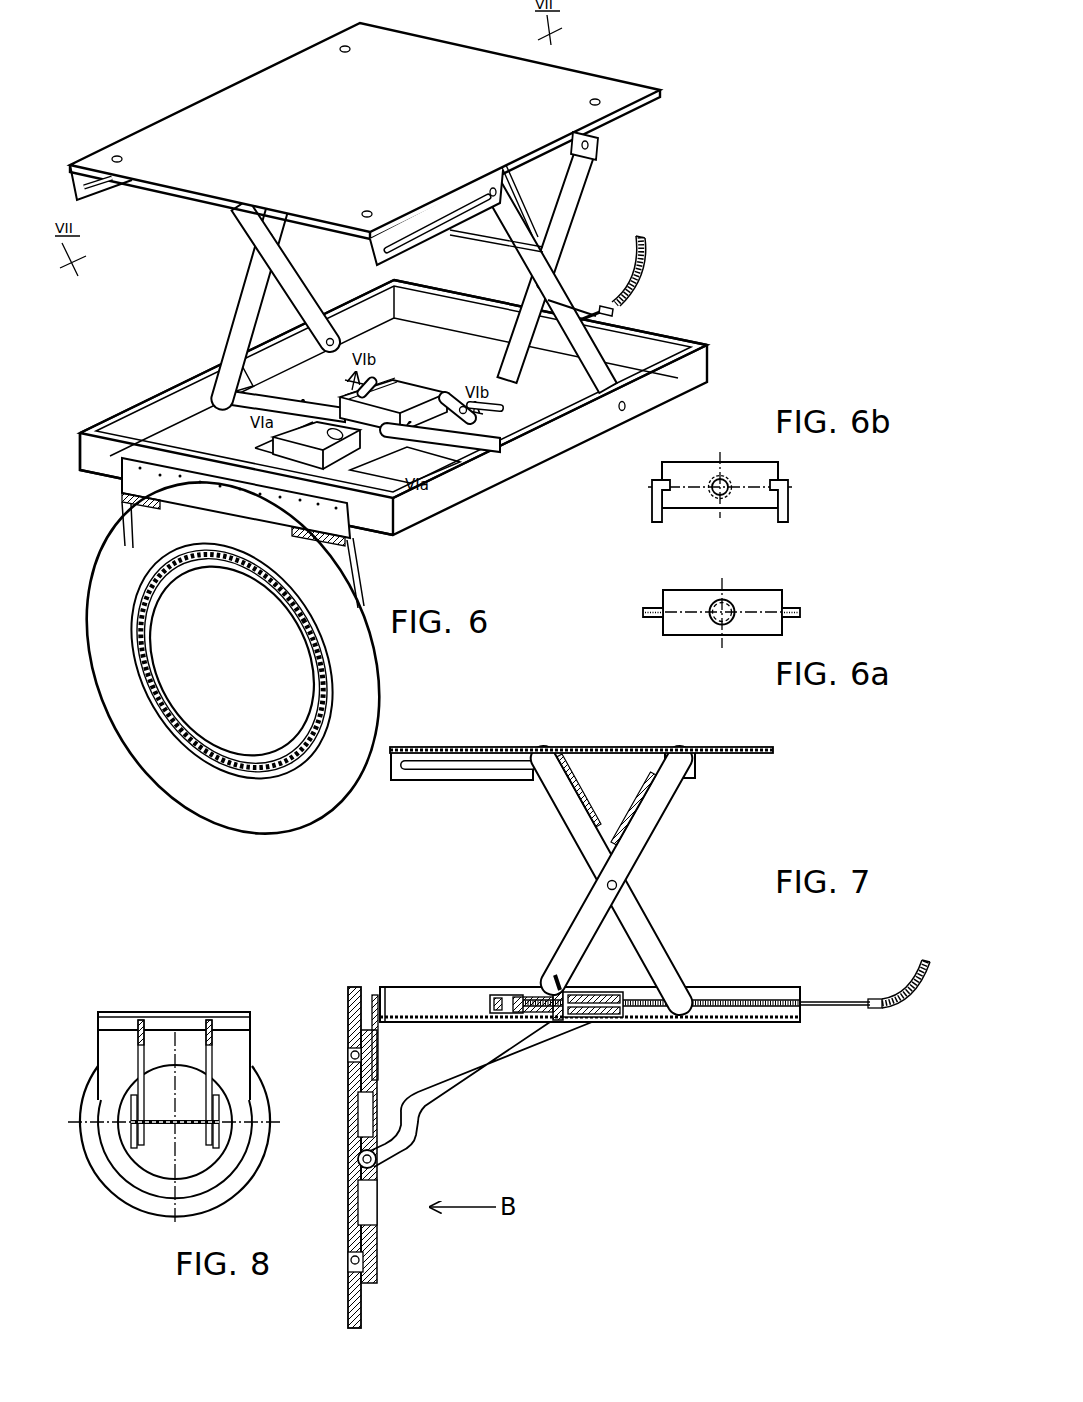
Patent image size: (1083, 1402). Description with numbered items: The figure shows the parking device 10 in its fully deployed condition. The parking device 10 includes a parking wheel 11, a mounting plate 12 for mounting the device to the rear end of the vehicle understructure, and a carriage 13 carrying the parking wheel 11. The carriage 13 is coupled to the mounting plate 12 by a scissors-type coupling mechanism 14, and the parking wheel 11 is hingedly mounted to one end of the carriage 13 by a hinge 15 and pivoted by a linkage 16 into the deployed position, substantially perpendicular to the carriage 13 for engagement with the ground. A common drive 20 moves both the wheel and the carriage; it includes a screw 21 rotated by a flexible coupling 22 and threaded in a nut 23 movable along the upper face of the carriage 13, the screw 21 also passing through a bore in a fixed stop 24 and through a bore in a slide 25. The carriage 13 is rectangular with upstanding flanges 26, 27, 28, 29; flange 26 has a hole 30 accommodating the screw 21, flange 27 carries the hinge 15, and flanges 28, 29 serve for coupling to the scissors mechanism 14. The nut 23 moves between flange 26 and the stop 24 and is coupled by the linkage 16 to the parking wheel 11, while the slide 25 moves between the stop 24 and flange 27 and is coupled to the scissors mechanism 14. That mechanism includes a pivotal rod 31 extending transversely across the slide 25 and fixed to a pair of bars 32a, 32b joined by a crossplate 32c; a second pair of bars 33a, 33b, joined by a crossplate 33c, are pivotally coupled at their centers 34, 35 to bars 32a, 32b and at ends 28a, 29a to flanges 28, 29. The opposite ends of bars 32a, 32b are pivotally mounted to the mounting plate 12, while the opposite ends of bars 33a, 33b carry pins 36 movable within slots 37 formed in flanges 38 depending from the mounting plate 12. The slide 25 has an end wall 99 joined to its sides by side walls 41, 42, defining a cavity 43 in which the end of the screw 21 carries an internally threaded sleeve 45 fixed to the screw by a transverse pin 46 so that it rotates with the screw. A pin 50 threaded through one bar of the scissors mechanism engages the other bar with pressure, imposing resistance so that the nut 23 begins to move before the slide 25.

In FIG. 6, the parking device 10 is at (738, 322).
In FIG. 6, the parking wheel 11 is at (135, 773).
In FIG. 7, the parking wheel 11 is at (363, 1313).
In FIG. 8, the parking wheel 11 is at (257, 1102).
In FIG. 6, the mounting plate 12 is at (204, 101).
In FIG. 7, the mounting plate 12 is at (687, 745).
In FIG. 6, the carriage 13 is at (528, 478).
In FIG. 7, the carriage 13 is at (590, 1004).
In FIG. 6, the scissors-type coupling mechanism 14 is at (579, 190).
In FIG. 7, the scissors-type coupling mechanism 14 is at (672, 807).
In FIG. 6, the hinge 15 is at (118, 483).
In FIG. 7, the hinge 15 is at (372, 1003).
In FIG. 8, the hinge 15 is at (210, 1013).
In FIG. 6, the linkage 16 is at (358, 542).
In FIG. 6B, the linkage 16 is at (790, 506).
In FIG. 7, the linkage 16 is at (487, 1077).
In FIG. 8, the linkage 16 is at (213, 1055).
In FIG. 7, the common drive 20 is at (900, 953).
In FIG. 6, the screw 21 is at (591, 312).
In FIG. 6B, the screw 21 is at (726, 482).
In FIG. 6A, the screw 21 is at (728, 600).
In FIG. 6, the flexible coupling 22 is at (657, 253).
In FIG. 6, the nut 23 is at (412, 387).
In FIG. 6B, the nut 23 is at (772, 464).
In FIG. 7, the nut 23 is at (597, 1020).
In FIG. 6, the stop 24 is at (352, 380).
In FIG. 7, the stop 24 is at (570, 992).
In FIG. 6, the slide 25 is at (403, 455).
In FIG. 6A, the slide 25 is at (668, 637).
In FIG. 7, the slide 25 is at (532, 996).
In FIG. 6, the flange 26 is at (661, 336).
In FIG. 6, the flange 27 is at (120, 427).
In FIG. 7, the flange 27 is at (380, 990).
In FIG. 6, the flange 28 is at (532, 438).
In FIG. 6, the bar end 28a is at (620, 411).
In FIG. 6, the flange 29 is at (172, 386).
In FIG. 6, the bar end 29a is at (328, 330).
In FIG. 7, the hole 30 is at (800, 1000).
In FIG. 6, the pivotal rod 31 is at (238, 398).
In FIG. 6A, the pivotal rod 31 is at (793, 604).
In FIG. 6, the bar 32a is at (230, 334).
In FIG. 7, the bar 32a is at (587, 903).
In FIG. 6, the bar 32b is at (536, 364).
In FIG. 6, the crossplate 32c is at (455, 232).
In FIG. 7, the crossplate 32c is at (620, 810).
In FIG. 6, the bar 33a is at (230, 219).
In FIG. 7, the bar 33a is at (673, 963).
In FIG. 6, the bar 33b is at (640, 372).
In FIG. 6, the crossplate 33c is at (527, 232).
In FIG. 7, the crossplate 33c is at (588, 803).
In FIG. 6, the center pivot 34 is at (266, 242).
In FIG. 7, the center pivot 34 is at (618, 885).
In FIG. 6, the center pivot 35 is at (574, 338).
In FIG. 6, the pin 36 is at (492, 186).
In FIG. 6, the slot 37 is at (406, 228).
In FIG. 7, the slot 37 is at (467, 773).
In FIG. 6, the flange 38 is at (364, 266).
In FIG. 7, the flange 38 is at (403, 785).
In FIG. 6, the side wall 41 is at (320, 510).
In FIG. 6, the side wall 42 is at (272, 437).
In FIG. 6, the cavity 43 is at (290, 445).
In FIG. 7, the sleeve 45 is at (513, 997).
In FIG. 7, the transverse pin 46 is at (507, 997).
In FIG. 6, the pin 50 is at (550, 257).
In FIG. 6, the end wall 99 is at (300, 465).